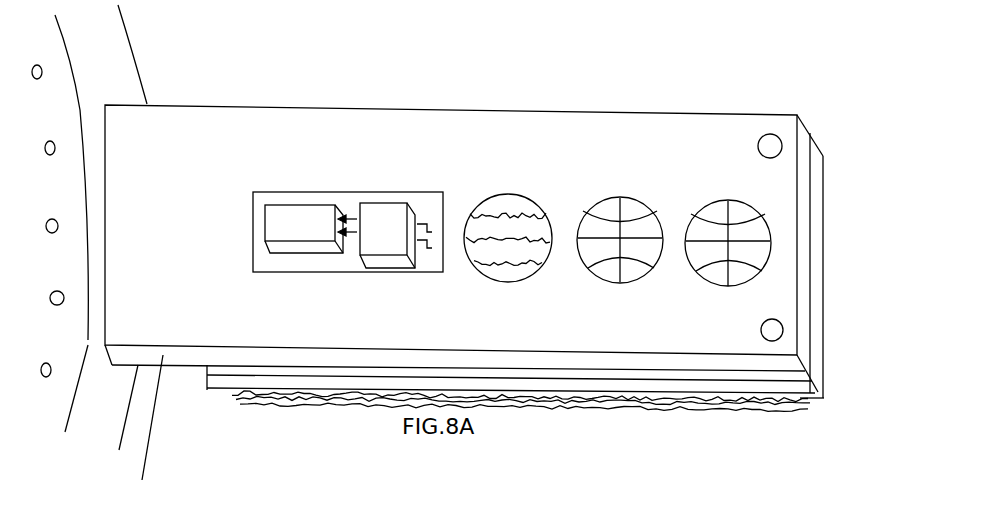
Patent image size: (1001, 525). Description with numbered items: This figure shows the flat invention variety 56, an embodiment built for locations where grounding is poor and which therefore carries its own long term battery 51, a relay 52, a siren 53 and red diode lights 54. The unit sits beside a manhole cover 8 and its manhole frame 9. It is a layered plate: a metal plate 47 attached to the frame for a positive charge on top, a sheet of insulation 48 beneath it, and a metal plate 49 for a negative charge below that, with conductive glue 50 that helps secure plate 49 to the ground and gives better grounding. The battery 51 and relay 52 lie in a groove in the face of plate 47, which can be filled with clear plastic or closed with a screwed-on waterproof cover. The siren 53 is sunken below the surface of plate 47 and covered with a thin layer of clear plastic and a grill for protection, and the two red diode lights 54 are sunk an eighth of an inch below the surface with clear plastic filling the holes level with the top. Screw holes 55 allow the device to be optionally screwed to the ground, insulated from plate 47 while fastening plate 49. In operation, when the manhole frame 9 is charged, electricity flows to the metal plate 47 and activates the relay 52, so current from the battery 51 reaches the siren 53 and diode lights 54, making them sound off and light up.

The manhole cover 8 is at (42, 47).
The manhole frame 9 is at (112, 70).
The metal plate 47 is at (133, 522).
The sheet of insulation 48 is at (207, 367).
The metal plate 49 is at (208, 390).
The conductive glue 50 is at (310, 403).
The long term battery 51 is at (295, 228).
The relay 52 is at (383, 229).
The siren 53 is at (508, 212).
The red diode lights 54 is at (724, 220).
The screw holes 55 is at (773, 145).
The flat invention variety 56 is at (437, 104).